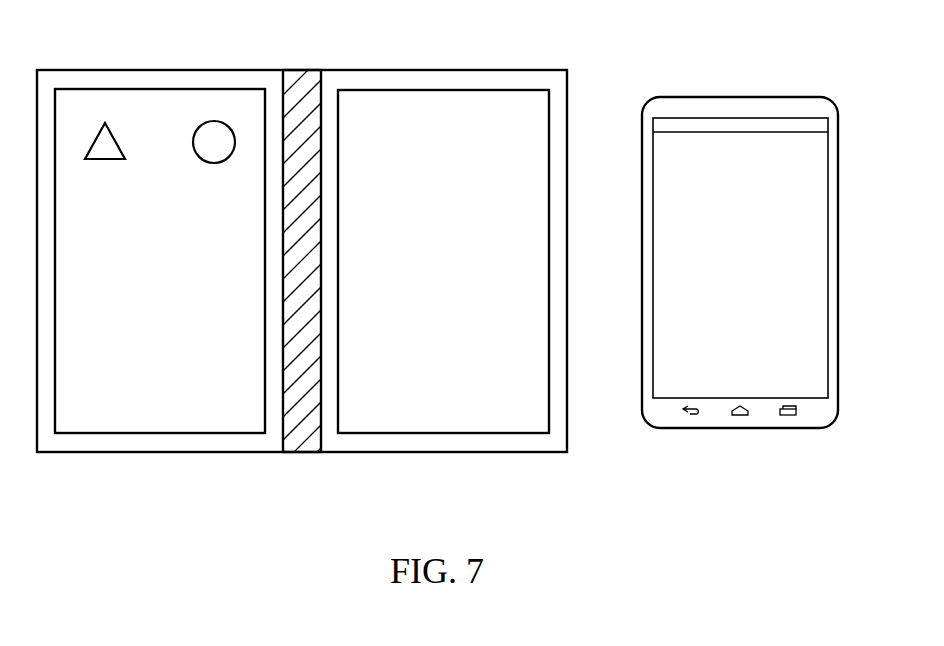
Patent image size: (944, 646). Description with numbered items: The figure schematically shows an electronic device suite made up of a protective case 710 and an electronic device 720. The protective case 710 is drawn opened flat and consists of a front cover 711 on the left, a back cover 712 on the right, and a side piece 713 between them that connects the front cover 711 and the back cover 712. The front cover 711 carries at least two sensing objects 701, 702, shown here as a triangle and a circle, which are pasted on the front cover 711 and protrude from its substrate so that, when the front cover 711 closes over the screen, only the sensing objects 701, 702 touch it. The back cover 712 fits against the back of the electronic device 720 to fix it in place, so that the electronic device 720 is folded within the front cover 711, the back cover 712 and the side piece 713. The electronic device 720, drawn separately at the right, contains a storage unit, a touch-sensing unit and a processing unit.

The protective case 710 is at (71, 70).
The front cover 711 is at (157, 108).
The back cover 712 is at (442, 108).
The side piece 713 is at (298, 108).
The sensing object 701 is at (105, 148).
The sensing object 702 is at (214, 147).
The electronic device 720 is at (738, 97).